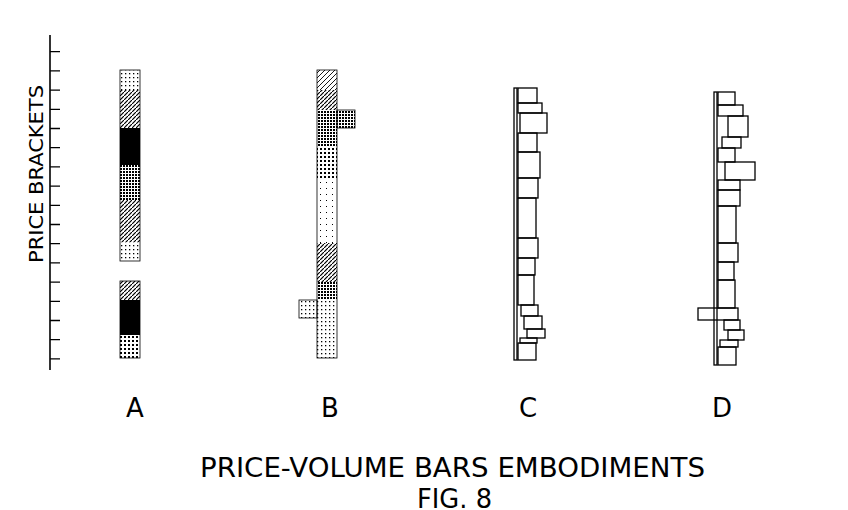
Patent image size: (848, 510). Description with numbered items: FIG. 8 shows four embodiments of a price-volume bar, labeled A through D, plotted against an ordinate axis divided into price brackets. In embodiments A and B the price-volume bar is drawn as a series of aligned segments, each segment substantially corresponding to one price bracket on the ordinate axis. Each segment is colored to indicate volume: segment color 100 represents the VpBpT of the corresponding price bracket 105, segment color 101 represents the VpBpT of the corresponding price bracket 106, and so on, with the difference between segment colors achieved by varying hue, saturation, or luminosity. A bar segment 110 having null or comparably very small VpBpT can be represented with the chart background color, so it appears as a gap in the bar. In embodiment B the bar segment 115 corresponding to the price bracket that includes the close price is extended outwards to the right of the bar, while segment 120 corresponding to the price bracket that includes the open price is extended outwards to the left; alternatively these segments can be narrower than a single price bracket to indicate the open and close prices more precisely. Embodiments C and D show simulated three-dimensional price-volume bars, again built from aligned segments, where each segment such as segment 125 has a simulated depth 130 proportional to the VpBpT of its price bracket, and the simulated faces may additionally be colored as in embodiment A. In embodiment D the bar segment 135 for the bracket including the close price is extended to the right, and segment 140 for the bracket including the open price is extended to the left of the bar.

The segment color 100 is at (272, 190).
The segment color 101 is at (133, 231).
The price bracket 105 is at (145, 71).
The price bracket 106 is at (150, 223).
The bar segment 110 is at (130, 273).
The bar segment 115 is at (355, 120).
The segment 120 is at (299, 313).
The segment 125 is at (542, 121).
The simulated depth 130 is at (628, 226).
The bar segment 135 is at (755, 170).
The segment 140 is at (698, 318).